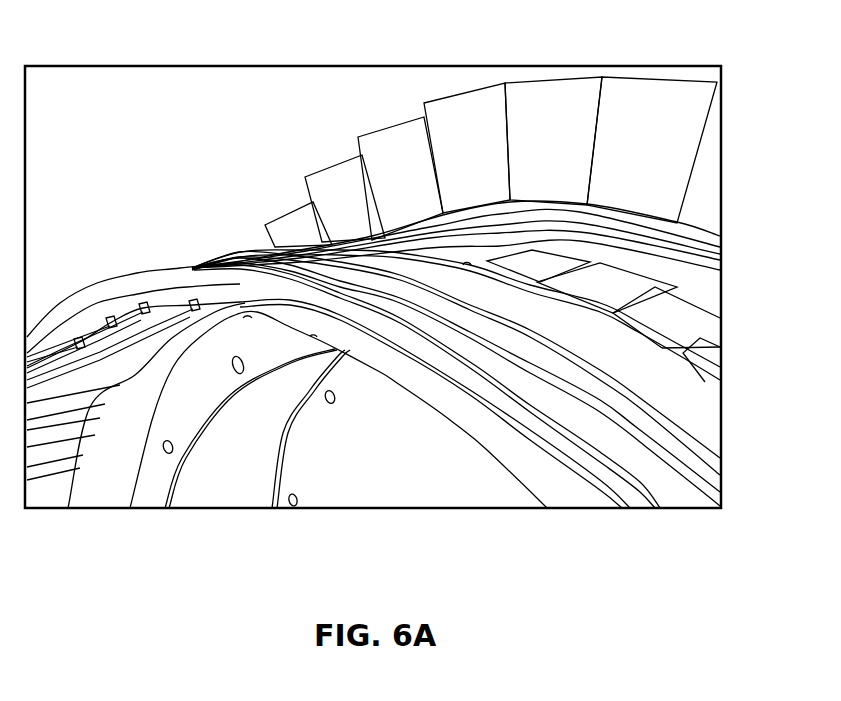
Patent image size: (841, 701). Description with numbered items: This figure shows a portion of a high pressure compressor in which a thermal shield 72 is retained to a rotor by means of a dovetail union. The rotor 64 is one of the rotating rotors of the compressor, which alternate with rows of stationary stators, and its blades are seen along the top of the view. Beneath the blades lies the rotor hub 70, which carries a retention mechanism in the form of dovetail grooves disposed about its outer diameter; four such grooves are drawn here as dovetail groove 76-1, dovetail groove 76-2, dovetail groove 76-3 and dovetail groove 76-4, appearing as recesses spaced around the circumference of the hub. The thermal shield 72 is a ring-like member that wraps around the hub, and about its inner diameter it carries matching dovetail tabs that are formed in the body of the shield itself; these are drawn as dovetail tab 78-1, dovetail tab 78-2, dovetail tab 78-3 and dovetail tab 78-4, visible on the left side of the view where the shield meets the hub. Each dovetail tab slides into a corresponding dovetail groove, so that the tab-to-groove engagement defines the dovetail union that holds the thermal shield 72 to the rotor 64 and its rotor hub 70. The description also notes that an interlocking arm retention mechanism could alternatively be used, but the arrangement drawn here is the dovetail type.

The rotor 64 is at (637, 90).
The rotor hub 70 is at (697, 318).
The thermal shield 72 is at (688, 466).
The dovetail groove 76-1 is at (714, 352).
The dovetail groove 76-2 is at (650, 292).
The dovetail groove 76-3 is at (580, 265).
The dovetail groove 76-4 is at (515, 250).
The dovetail tab 78-1 is at (193, 305).
The dovetail tab 78-2 is at (143, 308).
The dovetail tab 78-3 is at (110, 322).
The dovetail tab 78-4 is at (78, 343).